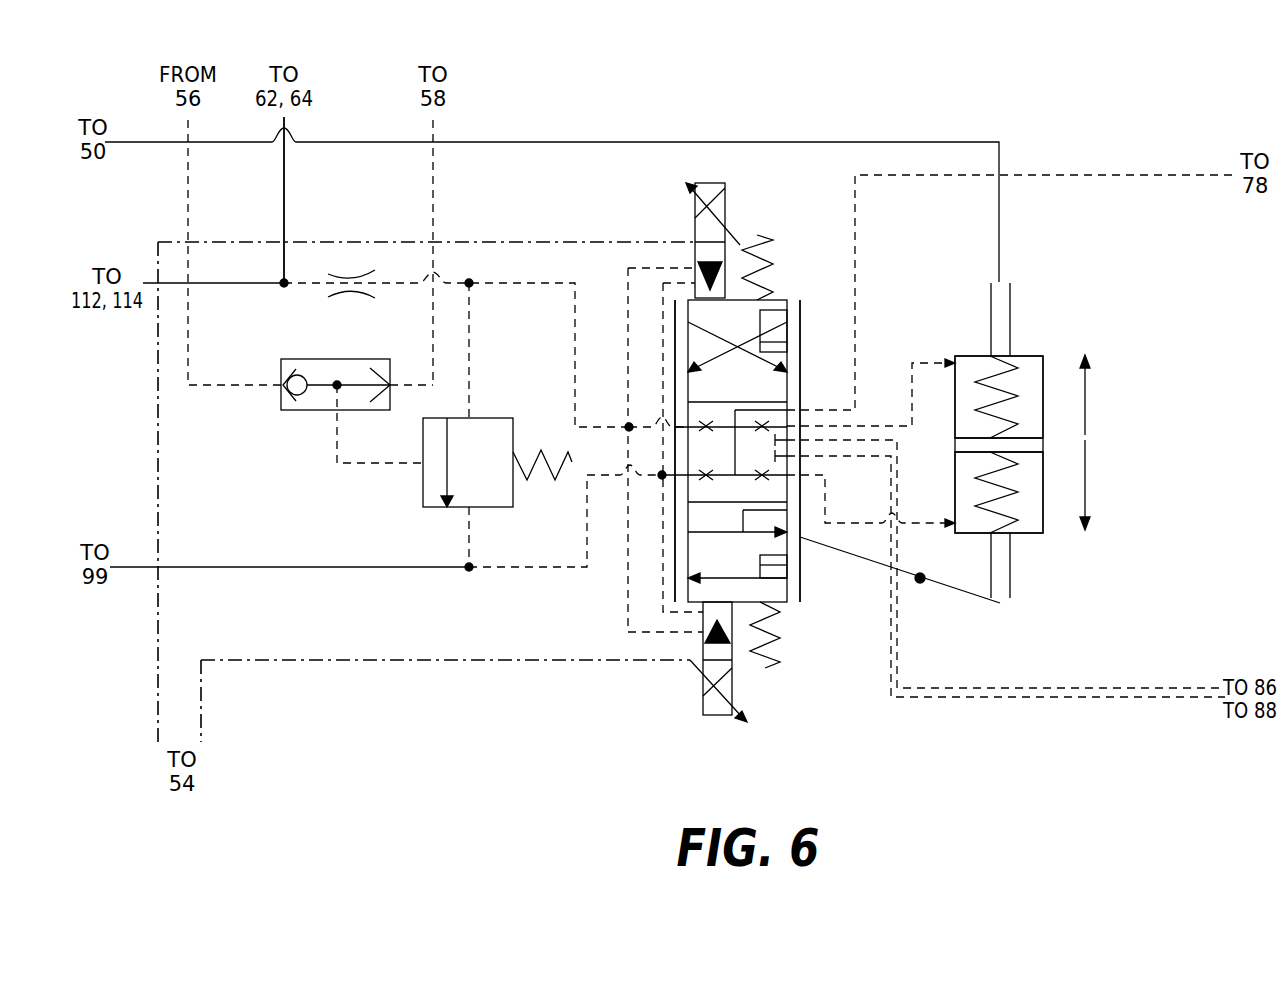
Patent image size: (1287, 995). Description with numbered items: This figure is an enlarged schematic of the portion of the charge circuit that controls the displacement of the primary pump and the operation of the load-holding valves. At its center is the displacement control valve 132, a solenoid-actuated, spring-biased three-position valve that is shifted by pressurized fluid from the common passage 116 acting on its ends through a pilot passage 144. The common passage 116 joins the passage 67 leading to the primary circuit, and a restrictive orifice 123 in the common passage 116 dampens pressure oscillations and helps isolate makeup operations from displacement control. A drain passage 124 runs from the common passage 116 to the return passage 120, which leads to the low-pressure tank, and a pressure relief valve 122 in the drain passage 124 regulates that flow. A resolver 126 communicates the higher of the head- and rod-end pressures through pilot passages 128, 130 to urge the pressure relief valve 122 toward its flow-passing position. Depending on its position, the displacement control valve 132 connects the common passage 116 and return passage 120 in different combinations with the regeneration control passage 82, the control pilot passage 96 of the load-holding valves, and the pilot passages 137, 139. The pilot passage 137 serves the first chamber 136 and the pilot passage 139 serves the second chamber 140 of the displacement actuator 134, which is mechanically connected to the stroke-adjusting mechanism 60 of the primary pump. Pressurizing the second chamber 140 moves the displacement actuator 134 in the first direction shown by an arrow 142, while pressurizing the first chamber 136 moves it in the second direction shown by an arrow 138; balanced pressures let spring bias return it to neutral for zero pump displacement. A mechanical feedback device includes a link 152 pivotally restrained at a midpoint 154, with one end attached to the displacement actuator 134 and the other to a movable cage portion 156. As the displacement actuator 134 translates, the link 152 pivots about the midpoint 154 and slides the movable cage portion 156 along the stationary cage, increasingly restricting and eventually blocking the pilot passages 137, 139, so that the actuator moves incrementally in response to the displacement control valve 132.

The stroke-adjusting mechanism 60 is at (533, 142).
The passage 67 is at (284, 170).
The pilot passage 128 is at (190, 152).
The pilot passage 130 is at (435, 166).
The common passage 116 is at (220, 283).
The restrictive orifice 123 is at (360, 296).
The drain passage 124 is at (469, 355).
The resolver 126 is at (355, 357).
The pressure relief valve 122 is at (513, 420).
The return passage 120 is at (312, 568).
The pilot passage 144 is at (630, 572).
The displacement control valve 132 is at (845, 713).
The movable cage portion 156 is at (800, 575).
The link 152 is at (975, 598).
The midpoint 154 is at (918, 582).
The regeneration control passage 82 is at (1068, 175).
The pilot passage 137 is at (912, 378).
The control pilot passage 96 is at (1100, 697).
The pilot passage 139 is at (912, 522).
The displacement actuator 134 is at (1104, 516).
The first chamber 136 is at (1028, 365).
The second chamber 140 is at (1033, 518).
The arrow 142 is at (1086, 407).
The arrow 138 is at (1086, 504).